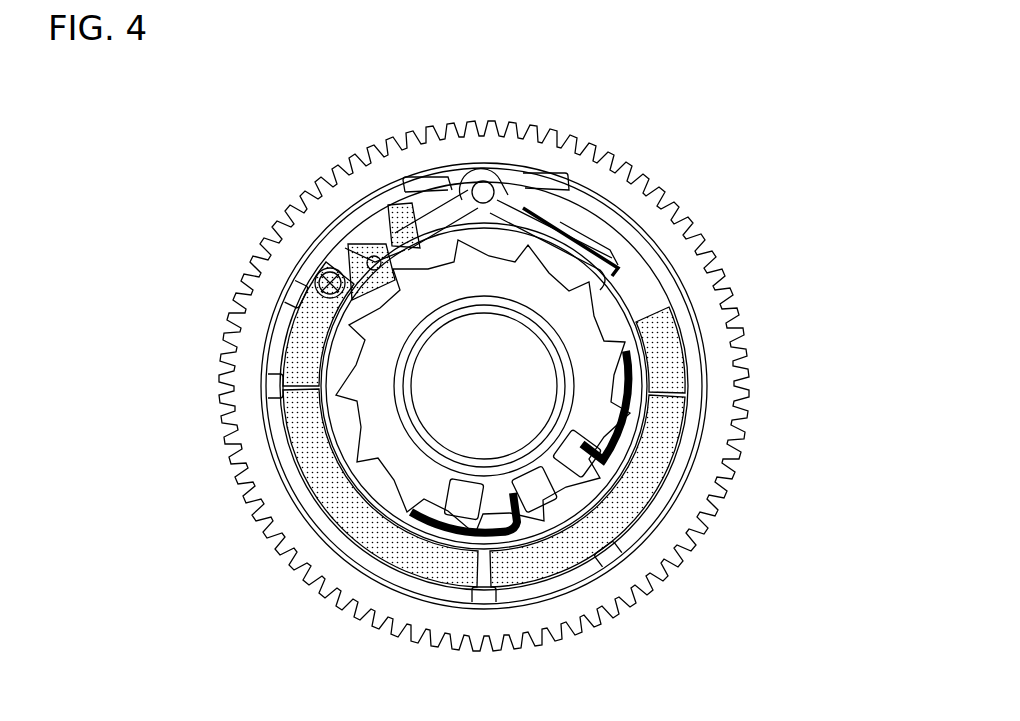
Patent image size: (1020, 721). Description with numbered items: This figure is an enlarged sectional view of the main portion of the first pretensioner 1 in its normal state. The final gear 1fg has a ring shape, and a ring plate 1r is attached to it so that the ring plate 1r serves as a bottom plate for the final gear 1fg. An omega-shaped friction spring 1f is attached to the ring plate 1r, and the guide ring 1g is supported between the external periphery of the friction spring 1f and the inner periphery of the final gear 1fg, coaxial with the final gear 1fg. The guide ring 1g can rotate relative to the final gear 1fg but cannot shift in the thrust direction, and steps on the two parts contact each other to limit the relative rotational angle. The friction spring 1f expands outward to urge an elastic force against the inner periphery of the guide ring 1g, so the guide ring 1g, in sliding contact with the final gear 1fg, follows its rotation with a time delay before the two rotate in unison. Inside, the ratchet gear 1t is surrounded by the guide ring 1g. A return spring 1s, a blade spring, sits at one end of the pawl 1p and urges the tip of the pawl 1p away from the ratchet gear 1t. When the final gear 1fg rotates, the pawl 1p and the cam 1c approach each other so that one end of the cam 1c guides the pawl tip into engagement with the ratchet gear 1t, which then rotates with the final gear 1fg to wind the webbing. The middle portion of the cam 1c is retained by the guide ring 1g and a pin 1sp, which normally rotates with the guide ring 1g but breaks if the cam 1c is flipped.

The first pretensioner 1 is at (189, 165).
The cam 1c is at (390, 235).
The pawl 1p is at (463, 183).
The return spring 1s is at (572, 228).
The final gear 1fg is at (710, 258).
The pin 1sp is at (315, 275).
The guide ring 1g is at (313, 463).
The friction spring 1f is at (643, 410).
The ratchet gear 1t is at (400, 467).
The ring plate 1r is at (480, 513).